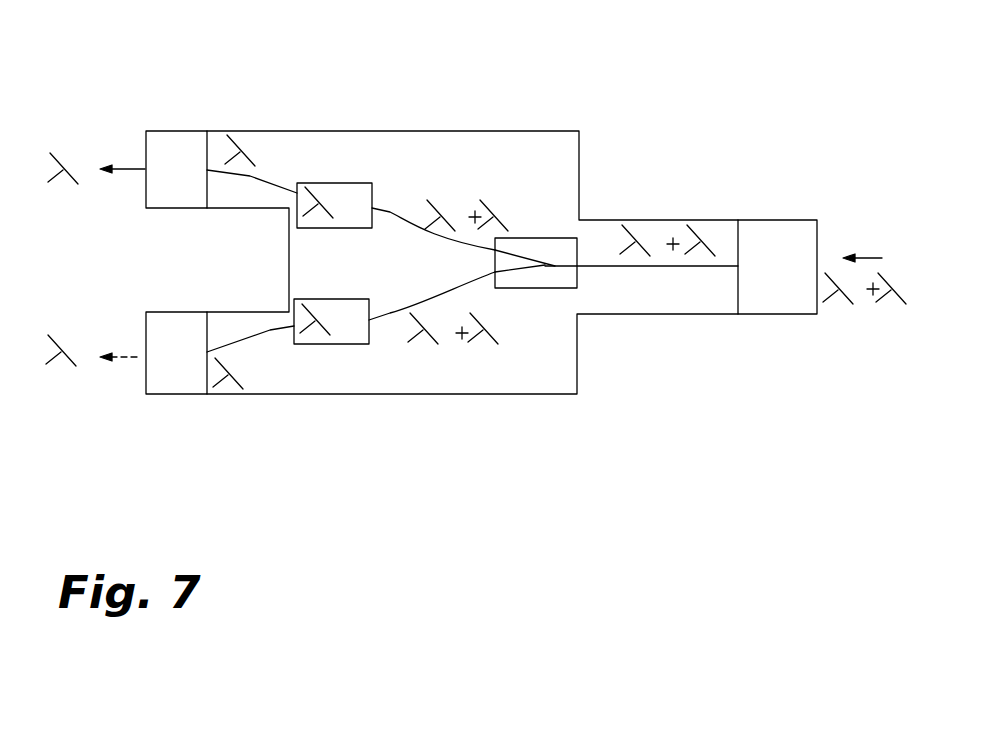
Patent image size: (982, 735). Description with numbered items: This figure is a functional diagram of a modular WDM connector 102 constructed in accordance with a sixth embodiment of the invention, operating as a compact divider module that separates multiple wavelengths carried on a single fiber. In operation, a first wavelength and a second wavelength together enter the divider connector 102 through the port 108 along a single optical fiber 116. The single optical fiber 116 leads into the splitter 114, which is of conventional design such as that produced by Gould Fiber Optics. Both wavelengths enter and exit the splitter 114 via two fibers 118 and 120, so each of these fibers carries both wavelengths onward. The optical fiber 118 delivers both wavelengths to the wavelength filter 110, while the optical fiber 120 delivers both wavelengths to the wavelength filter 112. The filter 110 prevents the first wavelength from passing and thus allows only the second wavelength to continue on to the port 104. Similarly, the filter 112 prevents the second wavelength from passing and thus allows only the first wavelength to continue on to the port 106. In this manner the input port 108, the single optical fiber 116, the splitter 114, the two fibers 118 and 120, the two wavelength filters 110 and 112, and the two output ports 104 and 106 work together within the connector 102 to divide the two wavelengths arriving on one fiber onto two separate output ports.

The connector 102 is at (434, 93).
The port 104 is at (163, 153).
The port 106 is at (163, 337).
The port 108 is at (785, 232).
The wavelength filter 110 is at (323, 184).
The wavelength filter 112 is at (318, 299).
The splitter 114 is at (580, 238).
The single optical fiber 116 is at (688, 267).
The optical fiber 118 is at (390, 210).
The optical fiber 120 is at (270, 330).